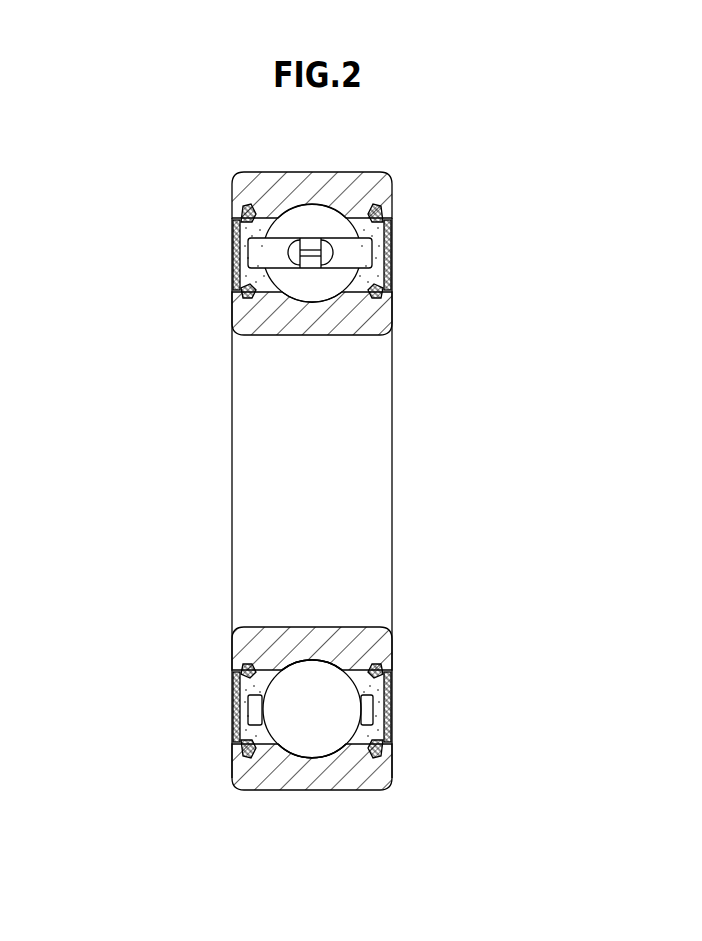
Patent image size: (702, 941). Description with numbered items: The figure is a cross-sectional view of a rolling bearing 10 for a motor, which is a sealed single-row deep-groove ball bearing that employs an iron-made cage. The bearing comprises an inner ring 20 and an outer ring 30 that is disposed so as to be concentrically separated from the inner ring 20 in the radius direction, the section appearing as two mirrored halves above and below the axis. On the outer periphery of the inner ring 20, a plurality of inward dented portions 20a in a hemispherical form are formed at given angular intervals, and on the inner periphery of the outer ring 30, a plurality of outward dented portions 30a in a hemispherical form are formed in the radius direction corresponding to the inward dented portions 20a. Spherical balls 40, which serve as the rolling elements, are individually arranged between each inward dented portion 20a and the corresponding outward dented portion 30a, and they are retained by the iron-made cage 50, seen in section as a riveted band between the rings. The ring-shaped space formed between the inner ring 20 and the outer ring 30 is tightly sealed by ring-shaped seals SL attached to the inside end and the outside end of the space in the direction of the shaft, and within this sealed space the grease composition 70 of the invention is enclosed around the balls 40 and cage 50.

The rolling bearing 10 is at (413, 180).
The inner ring 20 is at (255, 313).
The inward dented portion 20a is at (318, 672).
The outer ring 30 is at (257, 192).
The outward dented portion 30a is at (303, 756).
The spherical ball 40 is at (312, 717).
The iron-made cage 50 is at (262, 252).
The grease composition 70 is at (390, 283).
The ring-shaped seal SL is at (228, 229).